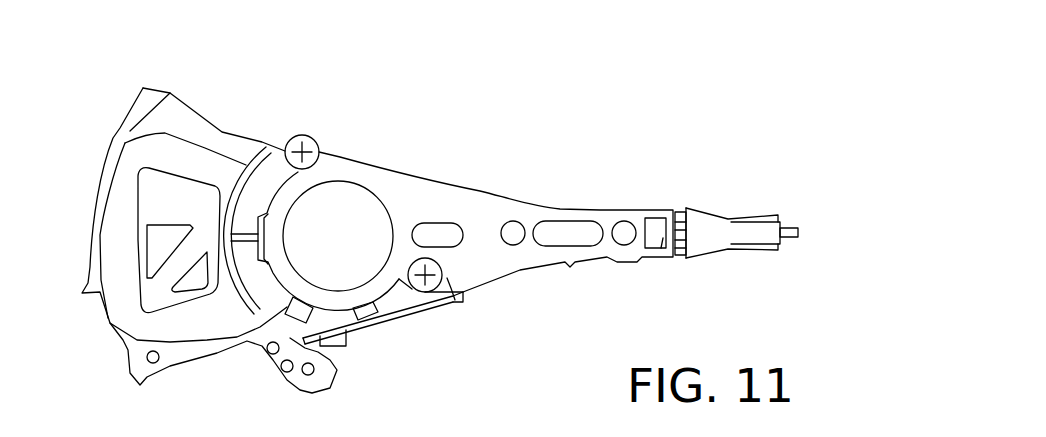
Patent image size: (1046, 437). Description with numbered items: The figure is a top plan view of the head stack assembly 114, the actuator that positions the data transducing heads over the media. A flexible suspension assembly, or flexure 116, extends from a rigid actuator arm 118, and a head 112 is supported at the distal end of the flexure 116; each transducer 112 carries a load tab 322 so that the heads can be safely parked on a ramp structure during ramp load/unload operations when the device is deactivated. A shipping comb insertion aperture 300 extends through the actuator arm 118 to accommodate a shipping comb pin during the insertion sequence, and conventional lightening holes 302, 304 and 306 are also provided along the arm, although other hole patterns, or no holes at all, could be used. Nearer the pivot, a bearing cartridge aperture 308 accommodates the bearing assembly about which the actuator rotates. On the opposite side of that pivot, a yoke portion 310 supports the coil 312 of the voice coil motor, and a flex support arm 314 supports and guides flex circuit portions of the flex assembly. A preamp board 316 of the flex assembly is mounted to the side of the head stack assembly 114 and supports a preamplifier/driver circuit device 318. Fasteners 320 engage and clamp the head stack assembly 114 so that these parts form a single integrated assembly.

The data transducing head 112 is at (769, 269).
The head stack assembly 114 is at (594, 43).
The flexible suspension assembly 116 is at (728, 232).
The rigid actuator arm 118 is at (483, 241).
The shipping comb insertion aperture 300 is at (513, 246).
The lightening hole 302 is at (440, 222).
The lightening hole 304 is at (567, 220).
The lightening hole 306 is at (624, 220).
The bearing cartridge aperture 308 is at (347, 203).
The yoke portion 310 is at (180, 115).
The coil 312 is at (130, 167).
The flex support arm 314 is at (280, 382).
The preamp board 316 is at (393, 325).
The preamplifier/driver circuit device 318 is at (340, 346).
The fastener 320 is at (312, 137).
The load tab 322 is at (798, 232).